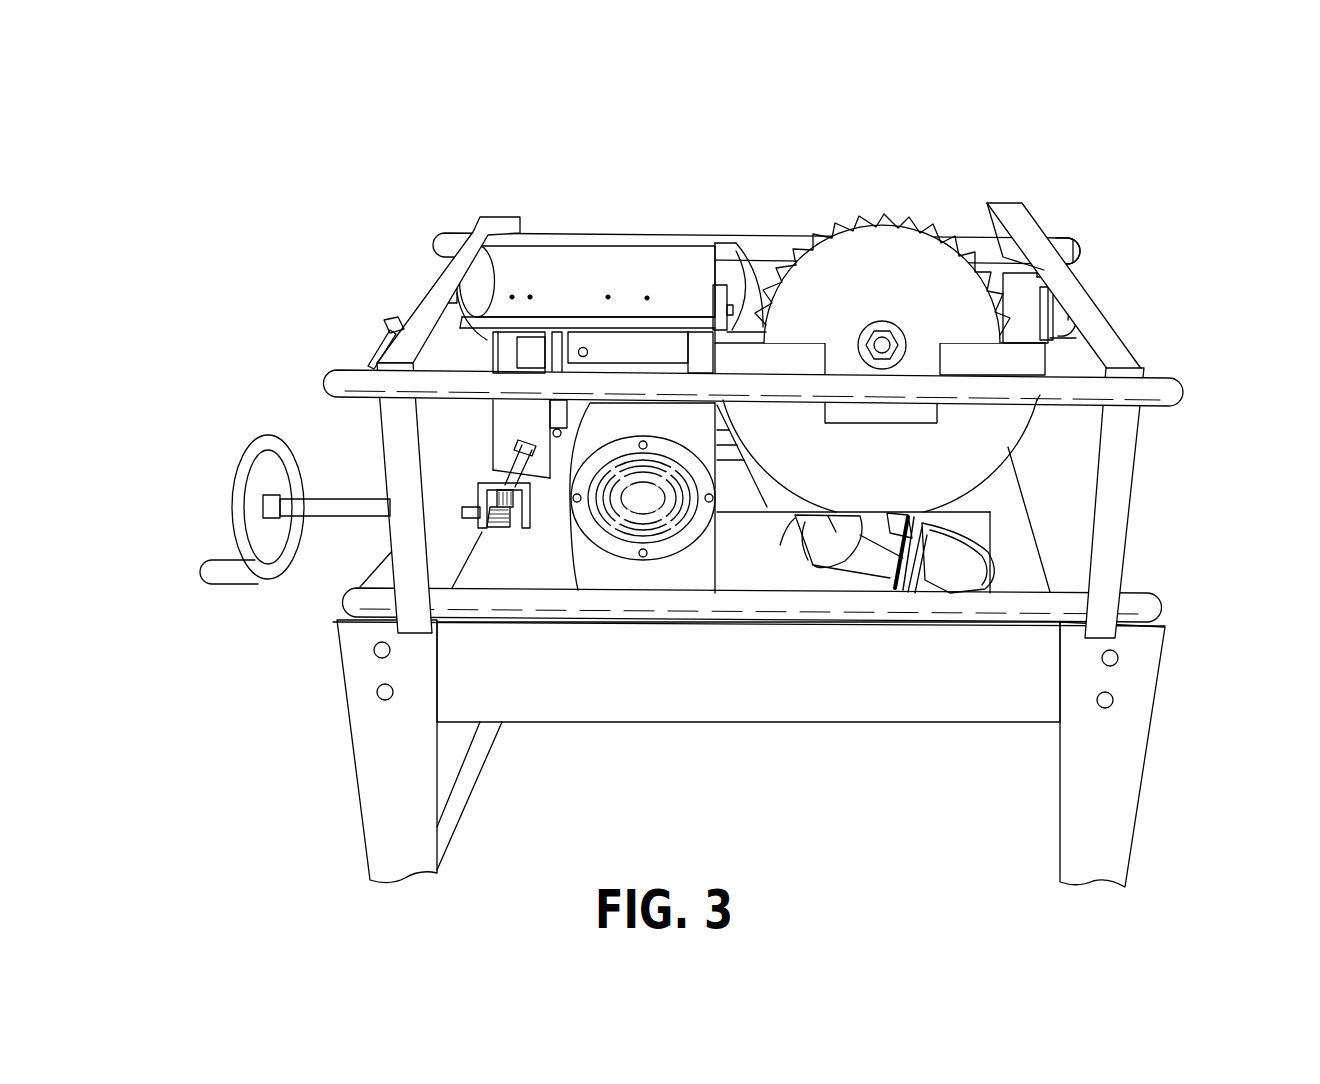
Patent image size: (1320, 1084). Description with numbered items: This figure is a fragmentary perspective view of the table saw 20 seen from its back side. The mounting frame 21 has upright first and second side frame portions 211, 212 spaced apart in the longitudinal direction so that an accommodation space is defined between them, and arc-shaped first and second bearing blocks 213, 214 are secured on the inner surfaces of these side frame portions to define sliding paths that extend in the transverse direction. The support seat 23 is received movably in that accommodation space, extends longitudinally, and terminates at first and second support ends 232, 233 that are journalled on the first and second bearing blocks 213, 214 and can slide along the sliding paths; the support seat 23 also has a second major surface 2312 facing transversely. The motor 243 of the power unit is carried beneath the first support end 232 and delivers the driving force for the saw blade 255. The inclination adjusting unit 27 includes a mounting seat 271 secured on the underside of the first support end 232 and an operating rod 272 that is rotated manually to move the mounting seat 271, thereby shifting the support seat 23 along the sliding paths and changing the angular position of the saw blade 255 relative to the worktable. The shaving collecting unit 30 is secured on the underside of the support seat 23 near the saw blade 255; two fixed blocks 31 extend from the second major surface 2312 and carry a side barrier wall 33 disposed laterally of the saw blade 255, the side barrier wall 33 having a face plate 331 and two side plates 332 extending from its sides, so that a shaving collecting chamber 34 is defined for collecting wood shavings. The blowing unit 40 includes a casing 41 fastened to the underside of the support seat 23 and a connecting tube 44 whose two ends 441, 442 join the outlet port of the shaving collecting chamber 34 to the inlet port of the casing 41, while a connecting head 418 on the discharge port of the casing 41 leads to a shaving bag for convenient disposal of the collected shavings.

The table saw 20 is at (1042, 203).
The mounting frame 21 is at (1025, 237).
The first side frame portion 211 is at (393, 425).
The second side frame portion 212 is at (1117, 352).
The first bearing block 213 is at (425, 320).
The second bearing block 214 is at (1058, 330).
The support seat 23 is at (735, 243).
The first support end 232 is at (512, 243).
The second support end 233 is at (1078, 237).
The second major surface 2312 is at (1005, 282).
The motor 243 is at (575, 580).
The saw blade 255 is at (878, 240).
The inclination adjusting unit 27 is at (235, 478).
The mounting seat 271 is at (493, 358).
The operating rod 272 is at (330, 513).
The shaving collecting unit 30 is at (1010, 487).
The fixed blocks 31 is at (713, 297).
The side barrier wall 33 is at (997, 438).
The face plate 331 is at (1020, 467).
The side plates 332 is at (731, 330).
The shaving collecting chamber 34 is at (782, 440).
The blowing unit 40 is at (877, 572).
The casing 41 is at (907, 570).
The connecting head 418 is at (953, 575).
The connecting tube 44 is at (838, 590).
The first end of connecting tube 441 is at (812, 567).
The second end of connecting tube 442 is at (935, 593).